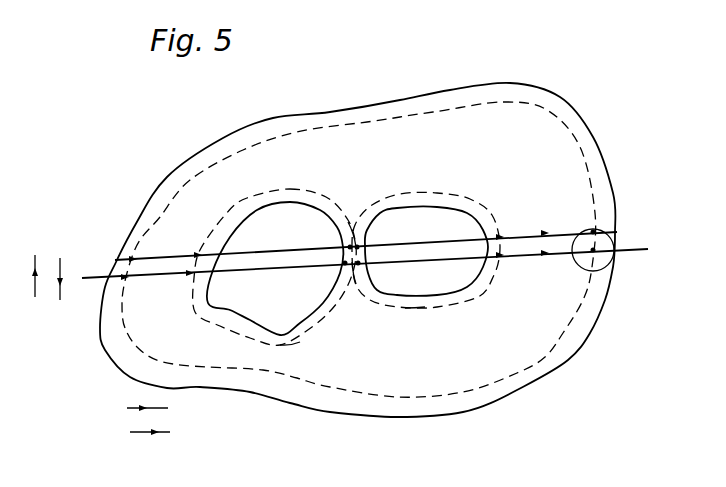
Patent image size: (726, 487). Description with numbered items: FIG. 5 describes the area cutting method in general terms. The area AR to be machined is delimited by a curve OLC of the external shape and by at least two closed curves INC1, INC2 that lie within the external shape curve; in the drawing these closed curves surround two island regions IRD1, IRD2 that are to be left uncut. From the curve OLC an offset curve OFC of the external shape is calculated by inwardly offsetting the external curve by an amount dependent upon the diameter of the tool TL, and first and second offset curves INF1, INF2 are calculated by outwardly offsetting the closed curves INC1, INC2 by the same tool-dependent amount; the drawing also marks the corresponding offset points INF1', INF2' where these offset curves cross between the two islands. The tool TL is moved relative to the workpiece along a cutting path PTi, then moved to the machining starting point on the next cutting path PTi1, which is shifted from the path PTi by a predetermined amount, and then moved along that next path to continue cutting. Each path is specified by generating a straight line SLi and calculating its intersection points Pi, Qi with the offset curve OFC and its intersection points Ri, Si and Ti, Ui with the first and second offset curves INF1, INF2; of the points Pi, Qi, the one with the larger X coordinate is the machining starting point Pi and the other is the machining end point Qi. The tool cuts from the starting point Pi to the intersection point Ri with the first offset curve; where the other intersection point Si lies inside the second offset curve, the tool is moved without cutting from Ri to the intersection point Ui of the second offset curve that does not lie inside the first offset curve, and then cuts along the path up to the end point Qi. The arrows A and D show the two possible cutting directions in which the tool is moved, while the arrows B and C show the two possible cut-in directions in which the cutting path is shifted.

The curve of the external shape OLC is at (593, 136).
The offset curve of the external shape OFC is at (547, 110).
The first closed curve INC1 is at (443, 191).
The second closed curve INC2 is at (292, 192).
The island region 1 IRD1 is at (452, 280).
The island region 2 IRD2 is at (258, 220).
The tool TL is at (617, 232).
The straight line SLi is at (638, 250).
The machining end point Qi is at (133, 288).
The point of intersection Ui is at (192, 273).
The point of intersection Si is at (344, 265).
The point of intersection Ti is at (358, 266).
The point of intersection Ri is at (507, 260).
The next cutting path PTi1 is at (545, 235).
The cutting path PTi is at (542, 258).
The machining starting point Pi is at (600, 268).
The inflection point INF2' is at (370, 210).
The inflection point INF1' is at (344, 316).
The second offset curve INF2 is at (285, 395).
The first offset curve INF1 is at (399, 383).
The area AR is at (475, 375).
The arrow A is at (154, 409).
The arrow B is at (35, 287).
The arrow C is at (62, 268).
The arrow D is at (140, 429).